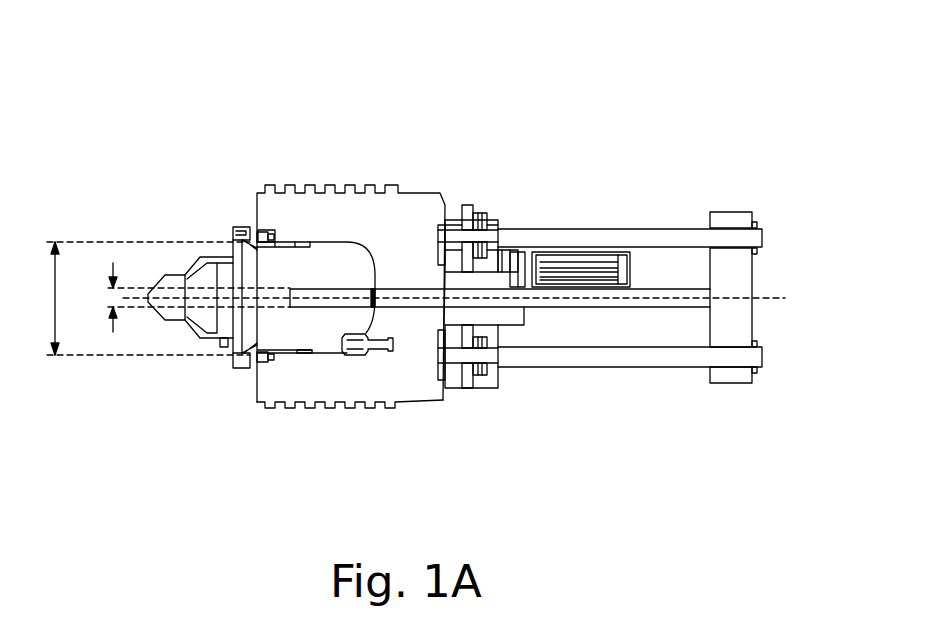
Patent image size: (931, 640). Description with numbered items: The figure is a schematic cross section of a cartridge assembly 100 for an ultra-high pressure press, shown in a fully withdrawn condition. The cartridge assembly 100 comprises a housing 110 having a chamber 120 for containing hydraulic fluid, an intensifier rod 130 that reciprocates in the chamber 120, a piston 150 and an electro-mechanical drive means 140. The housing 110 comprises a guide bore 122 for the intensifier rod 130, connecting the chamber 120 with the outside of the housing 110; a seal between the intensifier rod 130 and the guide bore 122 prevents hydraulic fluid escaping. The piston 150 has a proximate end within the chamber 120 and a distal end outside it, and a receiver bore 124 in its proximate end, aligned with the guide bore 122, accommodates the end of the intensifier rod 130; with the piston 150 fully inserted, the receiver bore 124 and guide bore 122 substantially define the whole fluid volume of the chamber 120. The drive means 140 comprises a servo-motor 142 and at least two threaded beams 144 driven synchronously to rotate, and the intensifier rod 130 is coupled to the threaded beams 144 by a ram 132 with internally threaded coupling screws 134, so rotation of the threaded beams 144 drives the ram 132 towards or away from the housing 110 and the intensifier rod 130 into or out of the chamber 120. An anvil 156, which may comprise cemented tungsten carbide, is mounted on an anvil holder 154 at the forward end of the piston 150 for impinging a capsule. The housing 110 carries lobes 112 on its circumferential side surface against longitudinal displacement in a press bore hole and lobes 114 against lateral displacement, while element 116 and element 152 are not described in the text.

The cartridge assembly 100 is at (477, 94).
The housing 110 is at (359, 277).
The lobes 112 is at (277, 406).
The lobes 114 is at (391, 403).
The locking pin 116 is at (358, 344).
The chamber 120 is at (374, 296).
The guide bore 122 is at (420, 304).
The receiver bore 124 is at (320, 296).
The intensifier rod 130 is at (500, 291).
The ram 132 is at (723, 292).
The coupling screws 134 is at (758, 225).
The electro-mechanical drive means 140 is at (697, 145).
The servo-motor 142 is at (595, 268).
The threaded beams 144 is at (665, 238).
The piston 150 is at (283, 258).
The flange 152 is at (227, 292).
The anvil holder 154 is at (202, 313).
The anvil 156 is at (161, 288).